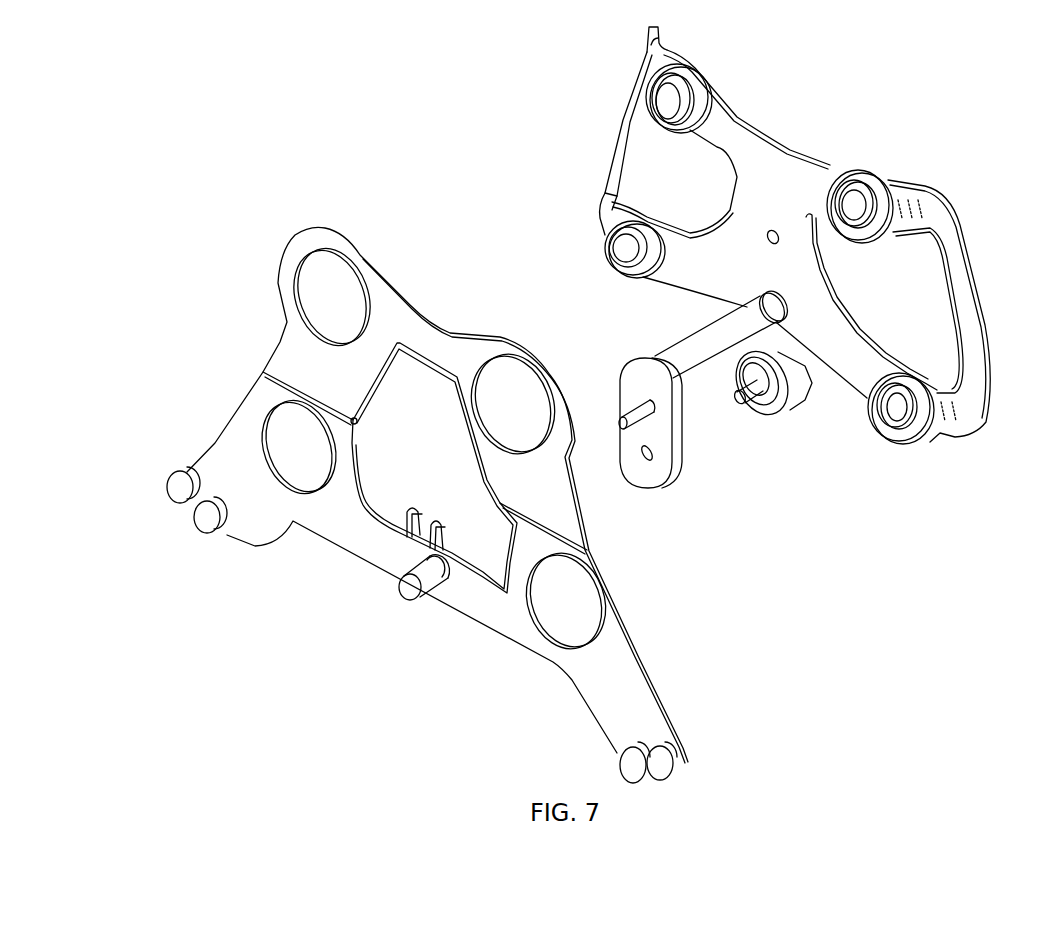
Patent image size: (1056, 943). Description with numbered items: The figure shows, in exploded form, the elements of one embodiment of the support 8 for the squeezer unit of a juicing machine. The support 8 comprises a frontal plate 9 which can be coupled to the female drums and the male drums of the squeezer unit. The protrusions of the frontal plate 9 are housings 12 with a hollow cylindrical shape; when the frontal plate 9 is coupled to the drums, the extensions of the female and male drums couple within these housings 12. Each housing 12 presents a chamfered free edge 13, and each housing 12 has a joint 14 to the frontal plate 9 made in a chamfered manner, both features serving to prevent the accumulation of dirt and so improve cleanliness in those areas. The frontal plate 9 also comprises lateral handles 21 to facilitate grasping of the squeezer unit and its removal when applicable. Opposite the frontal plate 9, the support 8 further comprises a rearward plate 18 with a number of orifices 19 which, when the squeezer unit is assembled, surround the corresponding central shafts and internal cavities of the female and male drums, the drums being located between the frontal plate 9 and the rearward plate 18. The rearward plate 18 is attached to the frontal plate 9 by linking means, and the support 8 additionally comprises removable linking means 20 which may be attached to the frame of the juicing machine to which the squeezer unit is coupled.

The support 8 is at (500, 161).
The frontal plate 9 is at (790, 180).
The housings 12 is at (673, 77).
The chamfered free edge 13 is at (677, 90).
The joint 14 is at (690, 80).
The rearward plate 18 is at (397, 557).
The orifices 19 is at (313, 286).
The removable linking means 20 is at (792, 403).
The lateral handles 21 is at (623, 157).